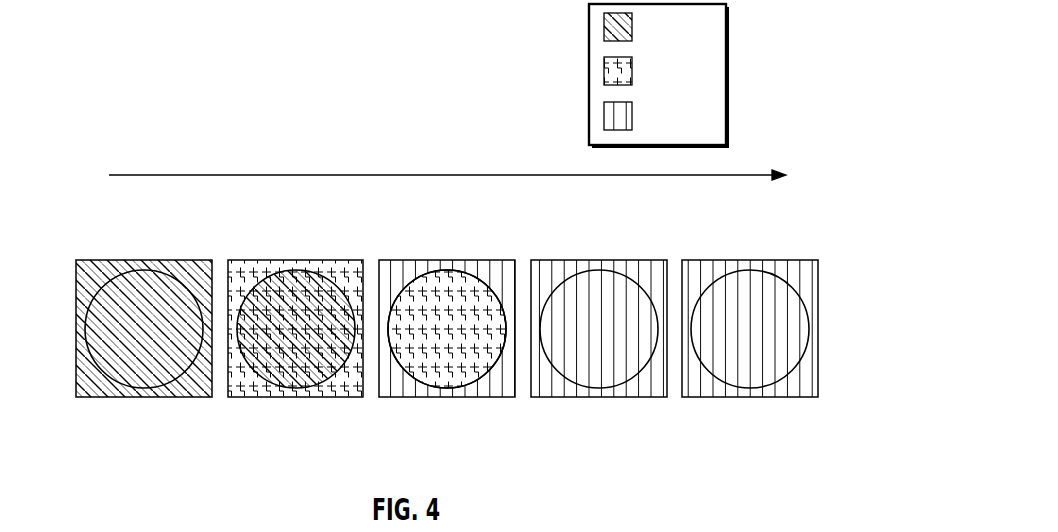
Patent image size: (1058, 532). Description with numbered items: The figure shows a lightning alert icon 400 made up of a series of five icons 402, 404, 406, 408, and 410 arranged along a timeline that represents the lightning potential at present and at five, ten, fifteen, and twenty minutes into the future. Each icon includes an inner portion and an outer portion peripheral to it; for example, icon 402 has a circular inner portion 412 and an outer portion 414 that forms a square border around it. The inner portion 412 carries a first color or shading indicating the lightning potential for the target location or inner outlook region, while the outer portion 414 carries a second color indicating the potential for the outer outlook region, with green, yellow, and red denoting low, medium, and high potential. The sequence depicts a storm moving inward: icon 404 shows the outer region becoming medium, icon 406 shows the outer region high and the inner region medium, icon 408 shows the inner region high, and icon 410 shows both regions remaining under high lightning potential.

The lightning alert icon 400 is at (108, 139).
The icon 402 is at (113, 359).
The icon 404 is at (296, 398).
The icon 406 is at (448, 398).
The icon 408 is at (600, 398).
The icon 410 is at (752, 398).
The inner portion 412 is at (97, 304).
The outer portion 414 is at (88, 373).